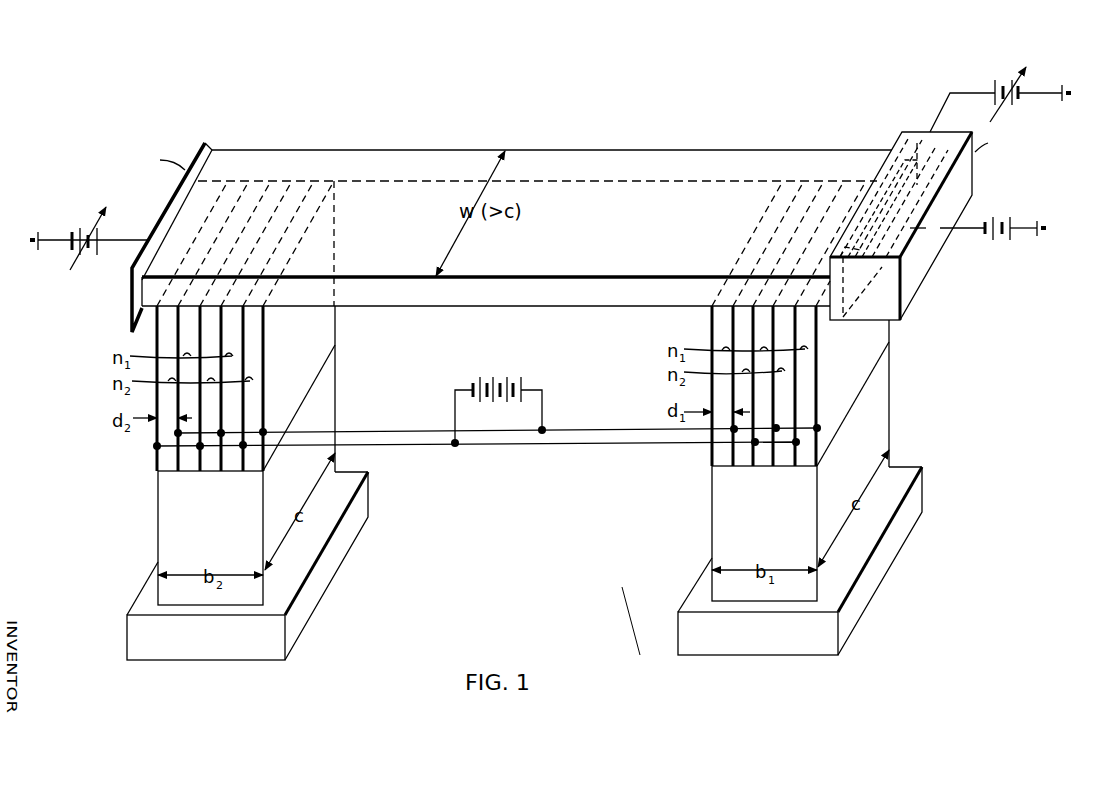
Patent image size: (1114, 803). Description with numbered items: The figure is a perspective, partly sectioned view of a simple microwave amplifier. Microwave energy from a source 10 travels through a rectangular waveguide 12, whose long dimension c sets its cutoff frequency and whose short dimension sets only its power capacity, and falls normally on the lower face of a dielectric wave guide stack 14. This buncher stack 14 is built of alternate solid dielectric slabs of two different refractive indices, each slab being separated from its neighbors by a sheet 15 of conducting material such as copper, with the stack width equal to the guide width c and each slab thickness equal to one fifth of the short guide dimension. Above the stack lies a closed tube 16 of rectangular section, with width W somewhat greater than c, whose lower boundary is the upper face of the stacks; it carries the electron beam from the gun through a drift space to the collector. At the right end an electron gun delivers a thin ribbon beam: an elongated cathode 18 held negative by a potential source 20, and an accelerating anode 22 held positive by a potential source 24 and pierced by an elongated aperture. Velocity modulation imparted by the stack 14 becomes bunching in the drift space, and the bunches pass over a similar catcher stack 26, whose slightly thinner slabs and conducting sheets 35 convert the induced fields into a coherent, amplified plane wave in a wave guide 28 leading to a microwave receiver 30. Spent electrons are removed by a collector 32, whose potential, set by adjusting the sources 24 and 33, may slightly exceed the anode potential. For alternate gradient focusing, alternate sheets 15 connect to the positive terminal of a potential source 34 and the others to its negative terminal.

The source 10 is at (877, 573).
The waveguide 12 is at (776, 531).
The dielectric wave guide stack 14 is at (858, 360).
The sheet of conducting material 15 is at (776, 383).
The closed tube 16 is at (632, 235).
The cathode 18 is at (934, 172).
The potential source 20 is at (1003, 246).
The accelerating anode 22 is at (905, 142).
The potential source 24 is at (1010, 80).
The dielectric waveguide stack 26 is at (304, 376).
The wave guide 28 is at (222, 536).
The microwave receiver 30 is at (323, 573).
The collector 32 is at (170, 199).
The source 33 is at (88, 226).
The potential source 34 is at (483, 375).
The conducting sheets 35 is at (222, 327).